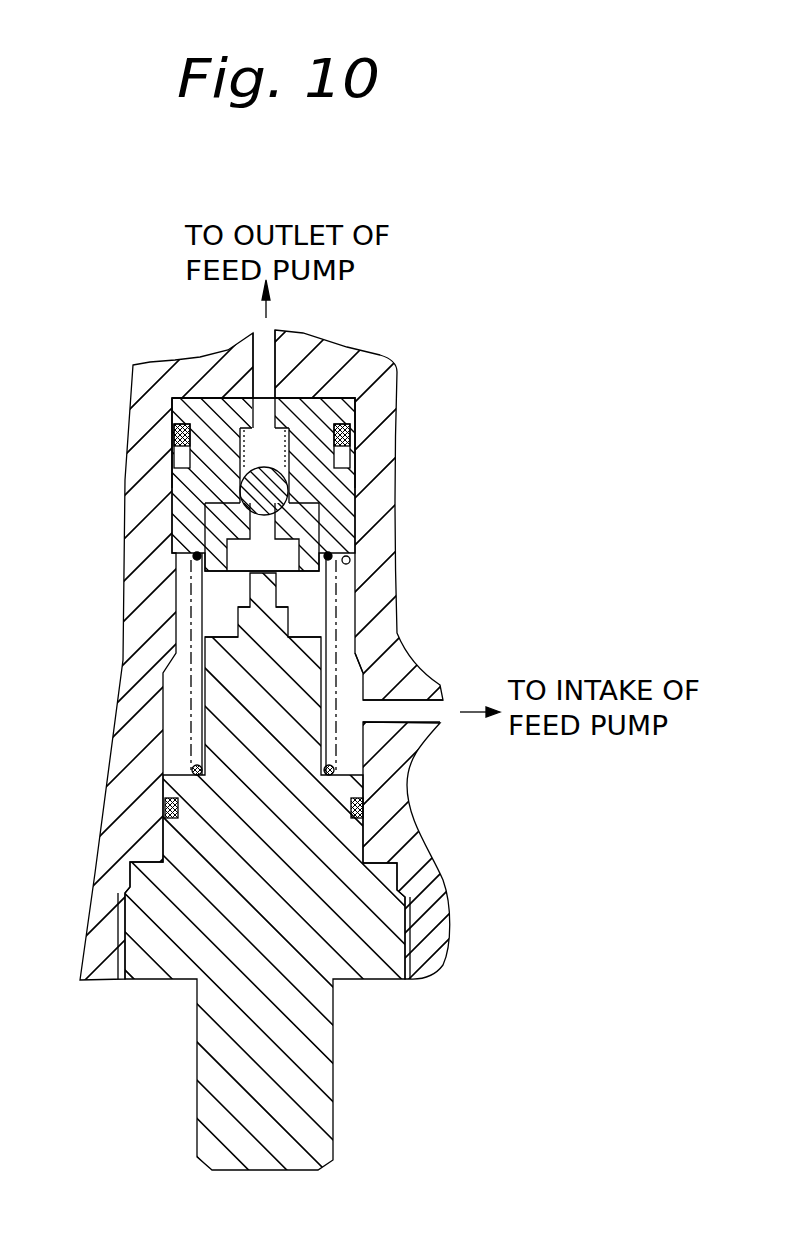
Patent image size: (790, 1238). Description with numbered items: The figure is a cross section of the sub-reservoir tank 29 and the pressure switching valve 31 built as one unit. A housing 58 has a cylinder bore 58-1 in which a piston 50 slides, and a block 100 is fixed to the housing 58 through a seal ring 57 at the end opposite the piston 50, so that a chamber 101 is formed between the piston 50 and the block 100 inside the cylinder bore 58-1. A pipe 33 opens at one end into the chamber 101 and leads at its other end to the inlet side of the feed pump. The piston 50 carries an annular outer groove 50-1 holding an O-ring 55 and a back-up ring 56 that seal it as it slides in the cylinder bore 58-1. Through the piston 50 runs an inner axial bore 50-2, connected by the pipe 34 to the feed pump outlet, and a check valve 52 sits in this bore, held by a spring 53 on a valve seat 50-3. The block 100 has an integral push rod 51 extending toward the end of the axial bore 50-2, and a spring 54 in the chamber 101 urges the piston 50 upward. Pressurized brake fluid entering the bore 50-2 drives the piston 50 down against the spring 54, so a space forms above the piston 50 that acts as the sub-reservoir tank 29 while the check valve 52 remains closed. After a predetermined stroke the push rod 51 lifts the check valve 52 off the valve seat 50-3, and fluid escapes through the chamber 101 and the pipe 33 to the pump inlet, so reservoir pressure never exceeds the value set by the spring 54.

The sub-reservoir tank 29 is at (395, 750).
The pressure switching valve 31 is at (395, 750).
The pipe 33 is at (405, 717).
The pipe 34 is at (265, 355).
The piston 50 is at (272, 449).
The annular outer groove 50-1 is at (174, 435).
The inner axial bore 50-2 is at (283, 398).
The valve seat 50-3 is at (225, 519).
The push rod 51 is at (273, 620).
The check valve 52 is at (240, 487).
The spring 53 is at (176, 428).
The spring 54 is at (355, 651).
The O-ring 55 is at (358, 423).
The back-up ring 56 is at (358, 457).
The seal ring 57 is at (360, 807).
The housing 58 is at (380, 376).
The cylinder bore 58-1 is at (354, 560).
The block 100 is at (395, 875).
The chamber 101 is at (173, 698).